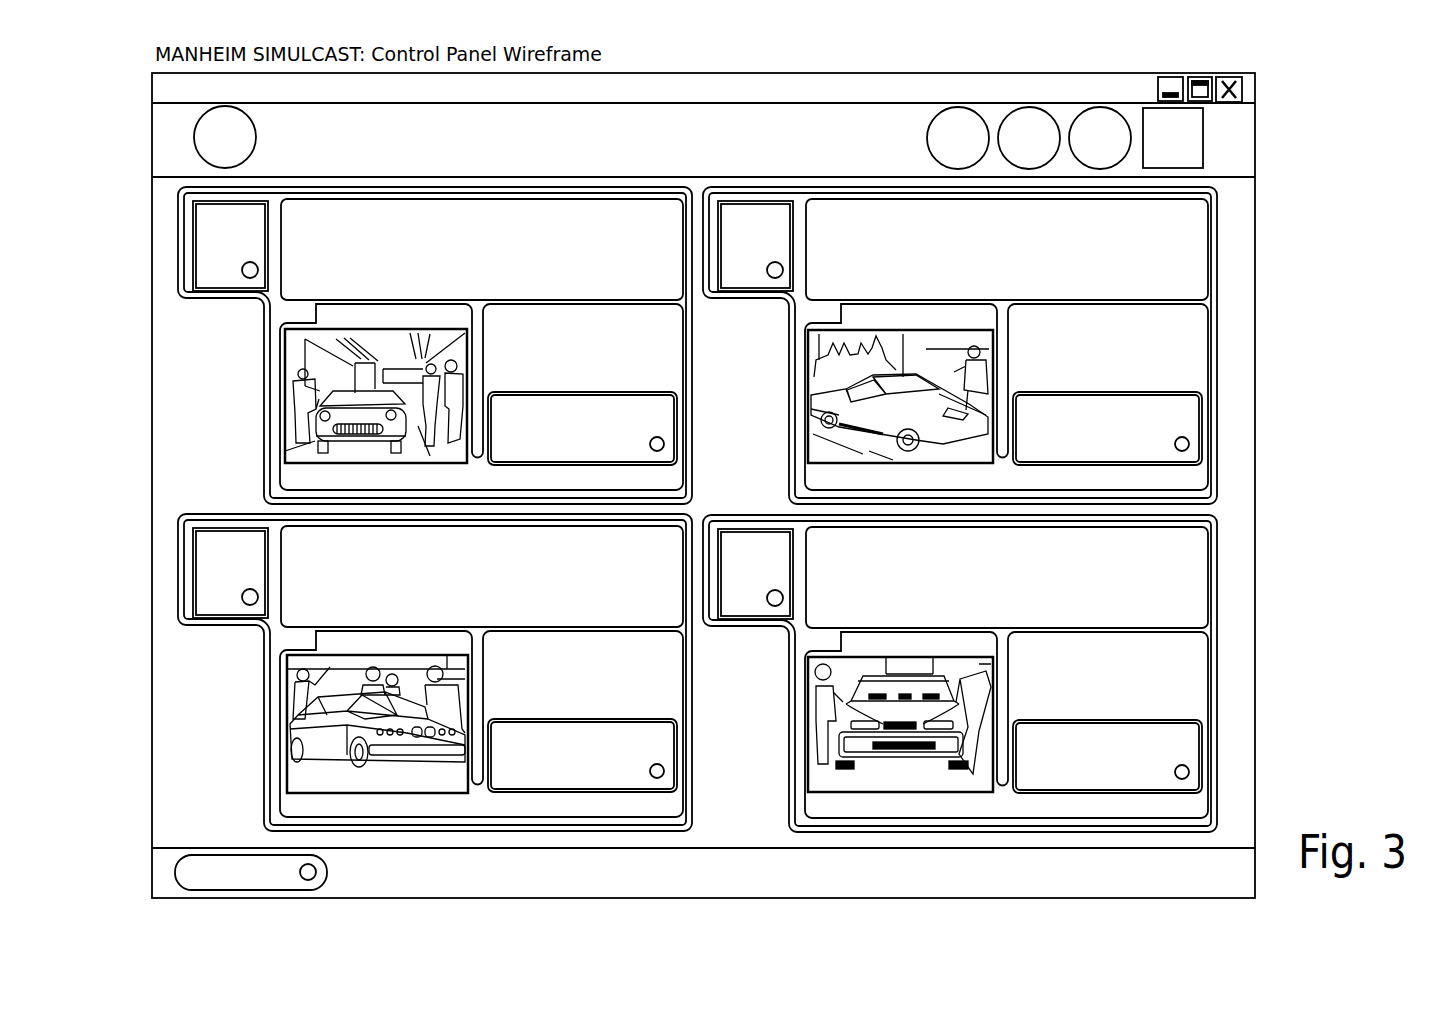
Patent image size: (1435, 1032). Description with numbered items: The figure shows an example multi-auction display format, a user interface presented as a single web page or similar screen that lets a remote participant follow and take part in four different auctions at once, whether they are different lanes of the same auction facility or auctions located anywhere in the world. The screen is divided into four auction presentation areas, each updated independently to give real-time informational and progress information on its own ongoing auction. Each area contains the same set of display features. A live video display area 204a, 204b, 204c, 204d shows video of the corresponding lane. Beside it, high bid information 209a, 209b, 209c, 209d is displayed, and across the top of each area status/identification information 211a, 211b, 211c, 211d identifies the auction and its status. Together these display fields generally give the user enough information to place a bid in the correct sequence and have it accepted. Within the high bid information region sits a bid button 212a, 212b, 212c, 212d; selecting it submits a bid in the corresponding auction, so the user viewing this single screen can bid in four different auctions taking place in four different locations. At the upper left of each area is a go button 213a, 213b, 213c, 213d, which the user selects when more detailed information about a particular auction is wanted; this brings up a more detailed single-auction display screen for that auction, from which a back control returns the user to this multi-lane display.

The live video display area 204a is at (293, 350).
The live video display area 204b is at (293, 663).
The live video display area 204c is at (823, 453).
The live video display area 204d is at (817, 782).
The high bid information 209a is at (613, 366).
The high bid information 209b is at (566, 686).
The high bid information 209c is at (1086, 366).
The high bid information 209d is at (1082, 689).
The status/identification information 211a is at (481, 268).
The status/identification information 211b is at (401, 591).
The status/identification information 211c is at (934, 258).
The status/identification information 211d is at (951, 584).
The bid button 212a is at (611, 444).
The bid button 212b is at (549, 764).
The bid button 212c is at (1094, 438).
The bid button 212d is at (1092, 764).
The go button 213a is at (193, 246).
The go button 213b is at (193, 550).
The go button 213c is at (737, 198).
The go button 213d is at (754, 530).